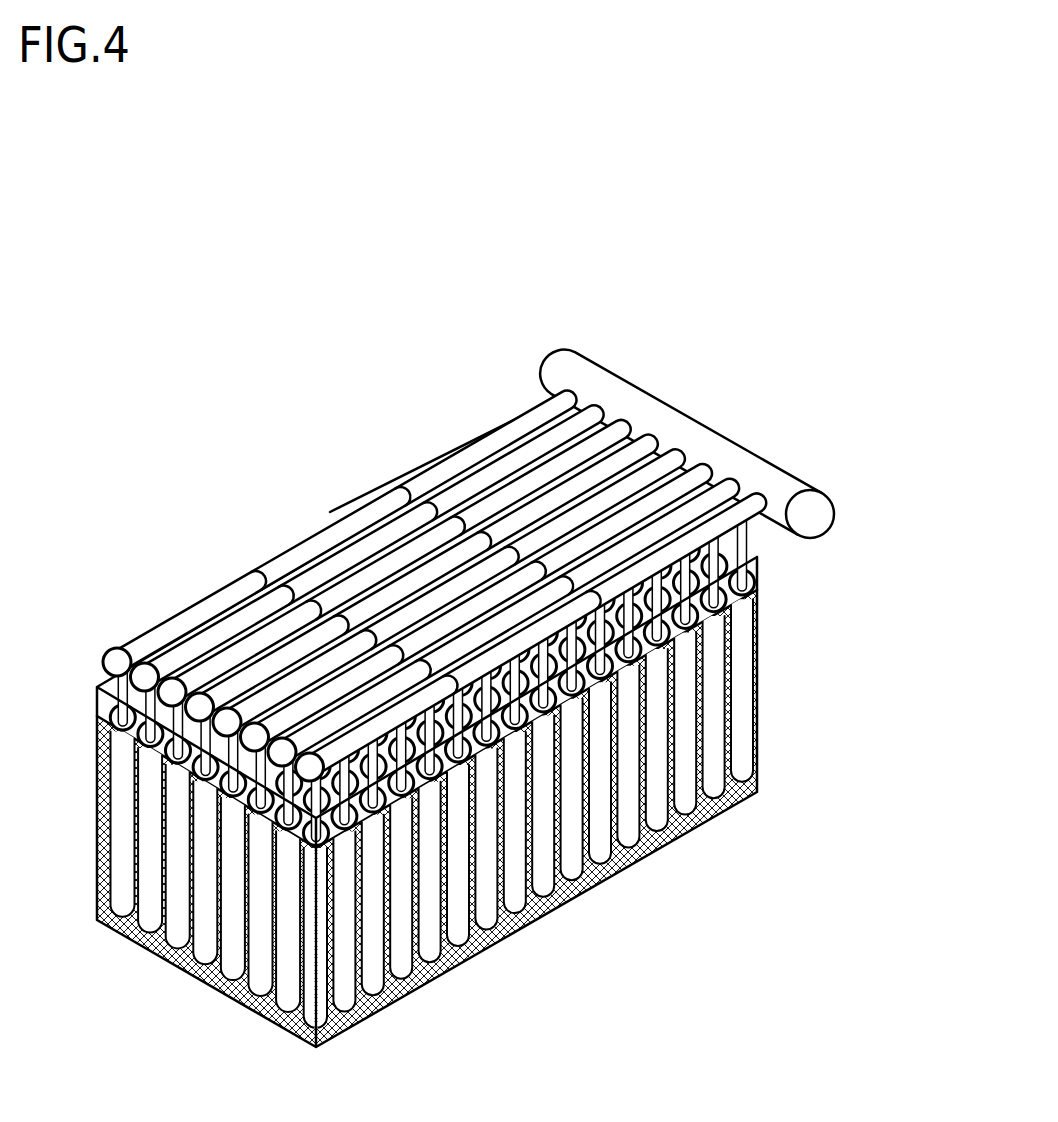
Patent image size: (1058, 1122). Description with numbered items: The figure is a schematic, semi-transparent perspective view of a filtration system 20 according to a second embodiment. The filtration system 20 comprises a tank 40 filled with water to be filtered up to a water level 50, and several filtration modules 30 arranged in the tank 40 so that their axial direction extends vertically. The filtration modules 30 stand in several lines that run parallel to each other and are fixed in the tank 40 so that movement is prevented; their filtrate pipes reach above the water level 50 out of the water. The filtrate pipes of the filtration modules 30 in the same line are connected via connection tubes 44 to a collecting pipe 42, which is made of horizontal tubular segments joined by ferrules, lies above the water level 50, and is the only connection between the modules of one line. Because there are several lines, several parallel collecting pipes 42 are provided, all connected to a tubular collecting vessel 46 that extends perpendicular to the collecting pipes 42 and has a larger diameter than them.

The filtration system 20 is at (490, 657).
The filtration module 30 is at (743, 693).
The tank 40 is at (111, 684).
The collecting pipe 42 is at (653, 527).
The connection tube 44 is at (742, 552).
The collecting vessel 46 is at (757, 467).
The water level 50 is at (97, 692).